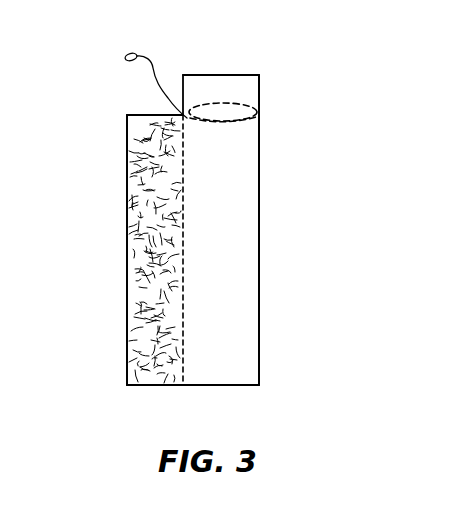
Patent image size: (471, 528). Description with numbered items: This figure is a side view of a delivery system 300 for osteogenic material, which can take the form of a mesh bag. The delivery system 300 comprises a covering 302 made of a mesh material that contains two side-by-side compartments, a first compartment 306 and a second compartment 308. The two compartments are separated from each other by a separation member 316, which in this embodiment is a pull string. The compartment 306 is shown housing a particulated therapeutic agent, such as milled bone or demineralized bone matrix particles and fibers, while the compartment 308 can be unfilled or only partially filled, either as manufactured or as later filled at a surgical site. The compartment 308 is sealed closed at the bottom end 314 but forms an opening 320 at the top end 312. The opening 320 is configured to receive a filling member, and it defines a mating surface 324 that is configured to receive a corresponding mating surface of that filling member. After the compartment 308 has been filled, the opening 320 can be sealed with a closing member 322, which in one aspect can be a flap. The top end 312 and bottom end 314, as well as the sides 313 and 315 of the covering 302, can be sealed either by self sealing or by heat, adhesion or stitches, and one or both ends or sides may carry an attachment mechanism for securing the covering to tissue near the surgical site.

The delivery system 300 is at (350, 196).
The covering 302 is at (268, 170).
The compartment 306 is at (138, 262).
The compartment 308 is at (245, 334).
The top end 312 is at (145, 113).
The side 313 is at (127, 207).
The bottom end 314 is at (155, 387).
The side 315 is at (259, 280).
The separation member 316 is at (165, 58).
The opening 320 is at (226, 92).
The closing member 322 is at (236, 86).
The mating surface 324 is at (252, 123).